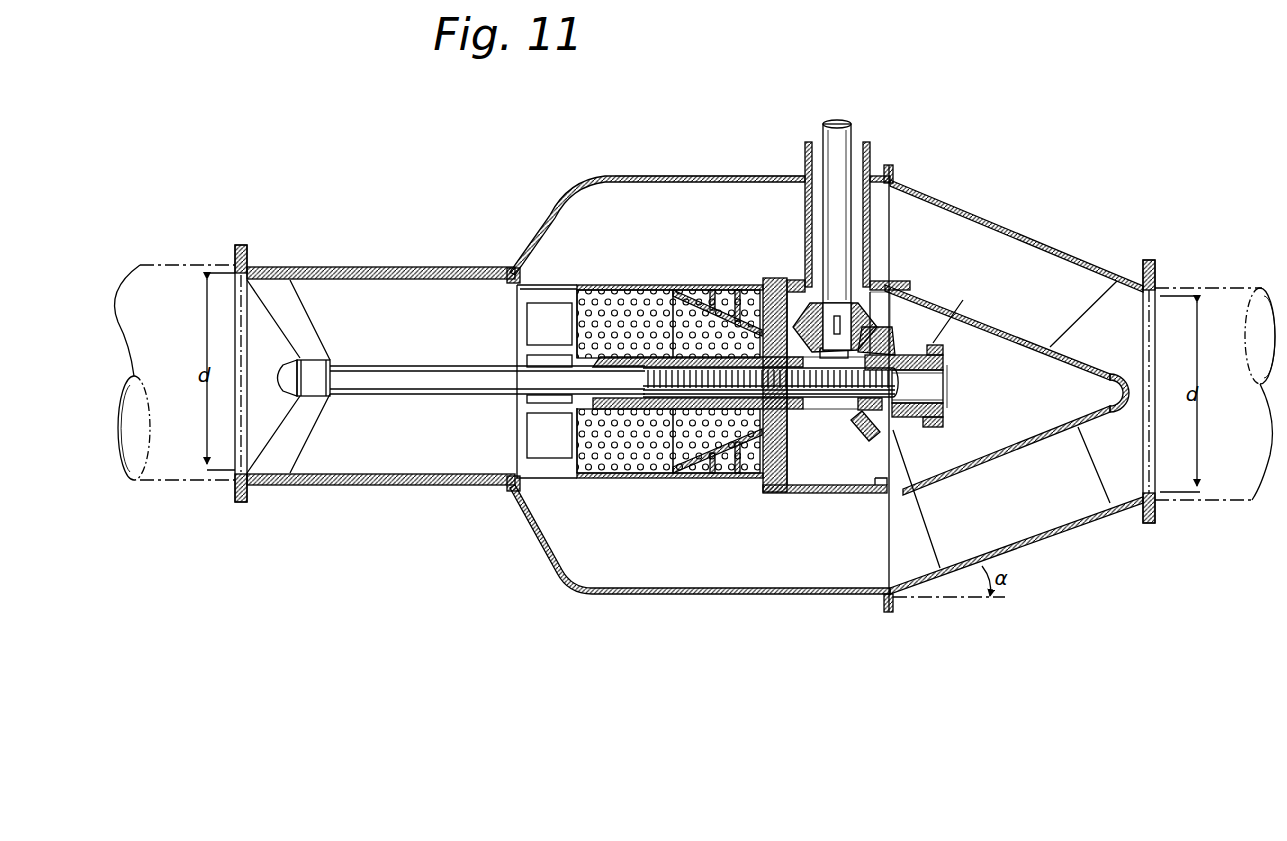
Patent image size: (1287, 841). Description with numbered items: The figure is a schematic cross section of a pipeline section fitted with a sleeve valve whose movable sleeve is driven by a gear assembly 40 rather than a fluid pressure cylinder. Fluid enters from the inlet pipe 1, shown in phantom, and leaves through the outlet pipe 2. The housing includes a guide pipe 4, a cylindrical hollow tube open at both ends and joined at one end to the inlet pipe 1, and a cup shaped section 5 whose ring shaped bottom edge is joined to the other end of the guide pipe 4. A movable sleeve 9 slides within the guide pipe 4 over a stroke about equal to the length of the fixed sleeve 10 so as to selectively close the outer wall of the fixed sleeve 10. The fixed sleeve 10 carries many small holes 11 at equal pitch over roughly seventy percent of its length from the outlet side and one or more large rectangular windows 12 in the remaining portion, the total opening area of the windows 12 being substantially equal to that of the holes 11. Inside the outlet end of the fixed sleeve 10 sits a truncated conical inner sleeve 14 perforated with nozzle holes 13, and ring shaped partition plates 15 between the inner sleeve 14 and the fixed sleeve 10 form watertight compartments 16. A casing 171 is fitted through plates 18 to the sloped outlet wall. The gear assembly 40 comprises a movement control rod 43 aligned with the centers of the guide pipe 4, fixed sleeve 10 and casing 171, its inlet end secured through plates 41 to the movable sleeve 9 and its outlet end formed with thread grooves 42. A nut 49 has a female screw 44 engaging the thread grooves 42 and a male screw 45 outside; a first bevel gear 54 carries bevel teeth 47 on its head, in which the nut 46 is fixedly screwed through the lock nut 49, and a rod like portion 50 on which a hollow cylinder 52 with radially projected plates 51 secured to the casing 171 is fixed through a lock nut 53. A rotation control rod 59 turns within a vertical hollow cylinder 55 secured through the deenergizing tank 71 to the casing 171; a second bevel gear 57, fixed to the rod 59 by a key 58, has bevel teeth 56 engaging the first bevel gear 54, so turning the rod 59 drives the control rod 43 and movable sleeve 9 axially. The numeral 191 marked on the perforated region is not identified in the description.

The fluid inlet pipe 1 is at (178, 282).
The fluid outlet pipe 2 is at (1232, 290).
The guide pipe 4 is at (338, 267).
The cup shaped section 5 is at (600, 176).
The movable sleeve 9 is at (384, 267).
The fixed sleeve 10 is at (550, 270).
The small holes 11 is at (577, 293).
The windows 12 is at (520, 290).
The nozzle holes 13 is at (738, 477).
The inner sleeve 14 is at (605, 282).
The ring shaped partition plates 15 is at (712, 294).
The watertight compartments 16 is at (690, 302).
The plates 18 is at (1048, 260).
The gear assembly 40 is at (850, 418).
The plates 41 is at (300, 314).
The thread grooves 42 is at (842, 405).
The movement control rod 43 is at (455, 394).
The female screw 44 is at (872, 436).
The male screw 45 is at (856, 430).
The nut 46 is at (890, 343).
The bevel teeth 47 is at (838, 434).
The nut 49 is at (771, 280).
The rod like portion 50 is at (950, 365).
The radially projected plates 51 is at (935, 318).
The hollow cylinder 52 is at (942, 422).
The lock nut 53 is at (946, 406).
The first bevel gear 54 is at (950, 376).
The vertical hollow cylinder 55 is at (870, 152).
The bevel teeth 56 is at (796, 282).
The second bevel gear 57 is at (860, 305).
The key 58 is at (852, 330).
The rotation control rod 59 is at (832, 130).
The deenergizing tank 71 is at (630, 172).
The casing 171 is at (1105, 277).
The perforated body 191 is at (647, 478).